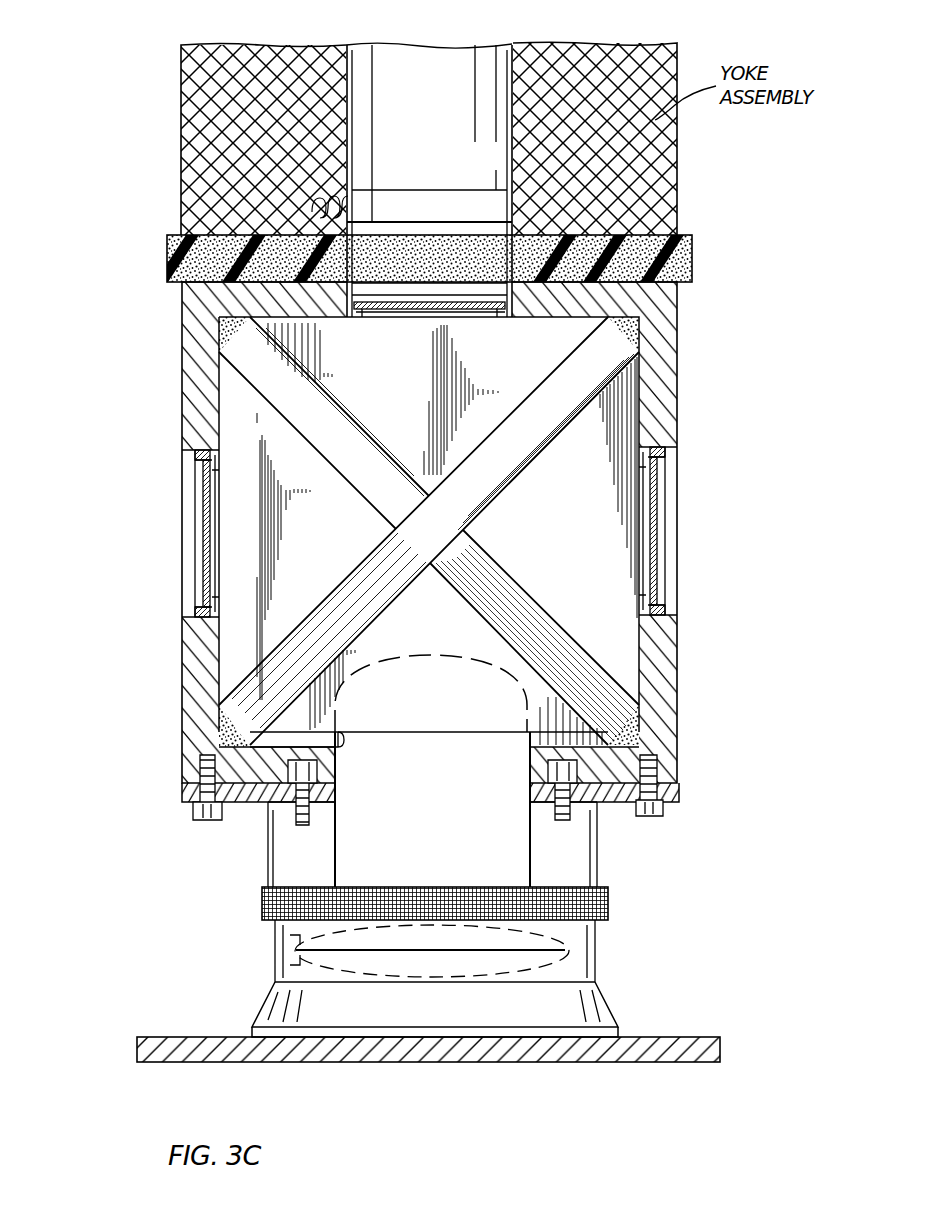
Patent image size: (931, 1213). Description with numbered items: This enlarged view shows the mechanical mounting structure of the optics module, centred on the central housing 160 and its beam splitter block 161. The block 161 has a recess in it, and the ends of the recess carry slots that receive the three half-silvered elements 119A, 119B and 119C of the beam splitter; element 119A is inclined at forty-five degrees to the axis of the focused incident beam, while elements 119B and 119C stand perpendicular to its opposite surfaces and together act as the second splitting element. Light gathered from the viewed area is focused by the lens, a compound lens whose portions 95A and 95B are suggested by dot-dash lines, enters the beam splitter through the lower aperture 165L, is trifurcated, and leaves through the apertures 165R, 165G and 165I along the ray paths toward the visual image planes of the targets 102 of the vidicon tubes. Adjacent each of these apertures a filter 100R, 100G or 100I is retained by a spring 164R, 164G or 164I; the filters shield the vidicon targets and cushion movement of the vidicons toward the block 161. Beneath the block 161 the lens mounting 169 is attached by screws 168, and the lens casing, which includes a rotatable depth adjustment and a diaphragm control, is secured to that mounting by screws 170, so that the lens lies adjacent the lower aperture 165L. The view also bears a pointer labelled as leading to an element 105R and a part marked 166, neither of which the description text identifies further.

The central housing 160 is at (158, 460).
The beam splitter block 161 is at (660, 416).
The vidicon targets 102 is at (432, 205).
The red light source connection 105R is at (312, 205).
The filter 100R is at (424, 300).
The spring 164R is at (500, 300).
The aperture 165R is at (366, 295).
The mounting plate 166 is at (175, 283).
The aperture 165I is at (195, 466).
The filter 100I is at (204, 538).
The spring 164I is at (205, 602).
The aperture 165G is at (676, 458).
The filter 100G is at (657, 530).
The spring 164G is at (665, 606).
The half-silvered element 119A is at (515, 600).
The half-silvered element 119B is at (520, 458).
The half-silvered element 119C is at (350, 580).
The lens portion 95A is at (545, 965).
The lens portion 95B is at (484, 662).
The lower aperture 165L is at (330, 737).
The screws 168 is at (207, 822).
The lens mounting 169 is at (183, 792).
The screws 170 is at (295, 812).